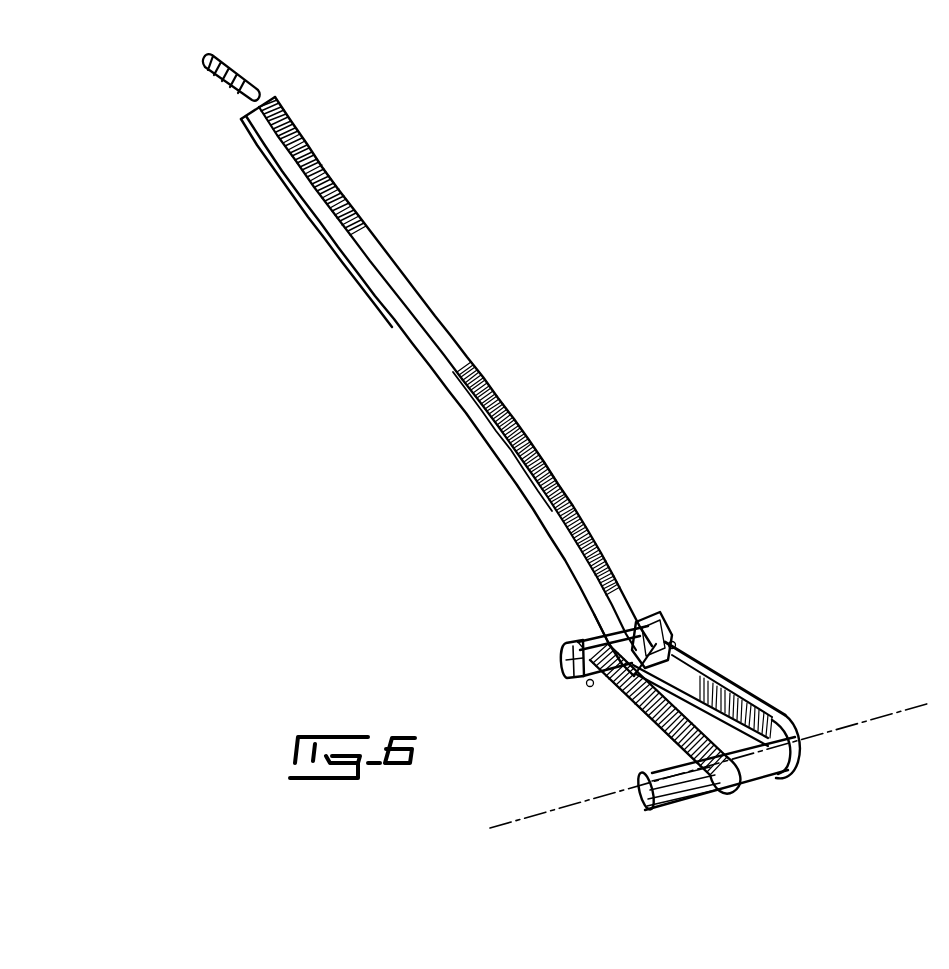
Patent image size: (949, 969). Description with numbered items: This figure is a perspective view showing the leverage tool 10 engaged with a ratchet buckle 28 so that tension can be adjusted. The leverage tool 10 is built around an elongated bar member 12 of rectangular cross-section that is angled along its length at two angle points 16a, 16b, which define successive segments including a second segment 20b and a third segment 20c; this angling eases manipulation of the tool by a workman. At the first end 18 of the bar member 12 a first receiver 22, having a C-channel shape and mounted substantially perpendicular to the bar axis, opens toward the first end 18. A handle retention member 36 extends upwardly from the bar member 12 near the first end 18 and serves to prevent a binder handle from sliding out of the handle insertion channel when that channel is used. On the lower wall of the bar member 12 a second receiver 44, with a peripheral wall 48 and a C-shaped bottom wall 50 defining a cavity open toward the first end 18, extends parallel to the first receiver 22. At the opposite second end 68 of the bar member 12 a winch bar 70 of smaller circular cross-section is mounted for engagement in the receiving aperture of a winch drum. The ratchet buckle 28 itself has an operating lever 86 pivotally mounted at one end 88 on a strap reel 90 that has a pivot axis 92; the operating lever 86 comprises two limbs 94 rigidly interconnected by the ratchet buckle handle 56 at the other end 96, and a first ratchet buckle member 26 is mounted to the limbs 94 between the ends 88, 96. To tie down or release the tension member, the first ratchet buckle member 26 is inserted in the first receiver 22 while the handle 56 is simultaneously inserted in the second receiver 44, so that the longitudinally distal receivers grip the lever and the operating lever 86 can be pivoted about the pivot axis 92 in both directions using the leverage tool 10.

The leverage tool 10 is at (440, 276).
The bar member 12 is at (457, 363).
The angle point 16a is at (597, 630).
The angle point 16b is at (567, 500).
The first end 18 is at (690, 650).
The second segment 20b is at (600, 560).
The third segment 20c is at (345, 207).
The first receiver 22 is at (673, 652).
The first ratchet buckle member 26 is at (707, 677).
The ratchet buckle 28 is at (833, 712).
The handle retention member 36 is at (640, 623).
The second receiver 44 is at (577, 677).
The peripheral wall 48 is at (567, 643).
The C-shaped bottom wall 50 is at (563, 660).
The ratchet buckle handle 56 is at (607, 688).
The second end 68 is at (258, 100).
The winch bar 70 is at (230, 68).
The operating lever 86 is at (626, 718).
The one end 88 is at (707, 780).
The strap reel 90 is at (763, 767).
The pivot axis 92 is at (840, 733).
The limbs 94 is at (760, 700).
The other end 96 is at (670, 642).